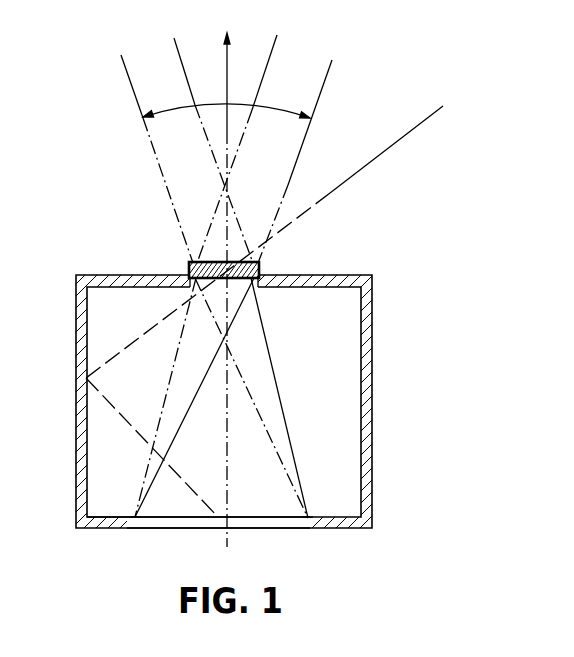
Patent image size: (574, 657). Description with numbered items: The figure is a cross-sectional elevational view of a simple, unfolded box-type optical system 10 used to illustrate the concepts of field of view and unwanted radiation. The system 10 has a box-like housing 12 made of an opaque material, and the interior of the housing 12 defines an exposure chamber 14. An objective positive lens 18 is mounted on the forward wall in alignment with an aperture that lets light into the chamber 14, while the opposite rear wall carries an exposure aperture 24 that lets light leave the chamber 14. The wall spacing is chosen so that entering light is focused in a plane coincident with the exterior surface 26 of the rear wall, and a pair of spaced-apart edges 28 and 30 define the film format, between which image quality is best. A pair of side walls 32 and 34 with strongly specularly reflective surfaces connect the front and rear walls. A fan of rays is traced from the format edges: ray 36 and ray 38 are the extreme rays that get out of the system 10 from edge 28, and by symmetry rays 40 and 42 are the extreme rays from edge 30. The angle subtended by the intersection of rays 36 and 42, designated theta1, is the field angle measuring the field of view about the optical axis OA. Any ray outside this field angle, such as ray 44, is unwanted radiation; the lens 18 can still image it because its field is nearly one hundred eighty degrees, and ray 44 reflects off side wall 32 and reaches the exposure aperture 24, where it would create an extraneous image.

The box-type optical system 10 is at (373, 342).
The housing 12 is at (367, 318).
The exposure chamber 14 is at (347, 443).
The objective positive lens 18 is at (260, 265).
The exposure aperture 24 is at (272, 523).
The exterior surface 26 is at (103, 527).
The edge 28 is at (132, 527).
The edge 30 is at (310, 523).
The side wall 32 is at (77, 427).
The side wall 34 is at (367, 382).
The ray 36 is at (289, 181).
The ray 38 is at (262, 80).
The ray 40 is at (188, 80).
The ray 42 is at (123, 67).
The ray 44 is at (369, 162).
The optical axis OA is at (226, 280).
The field angle theta1 is at (226, 113).